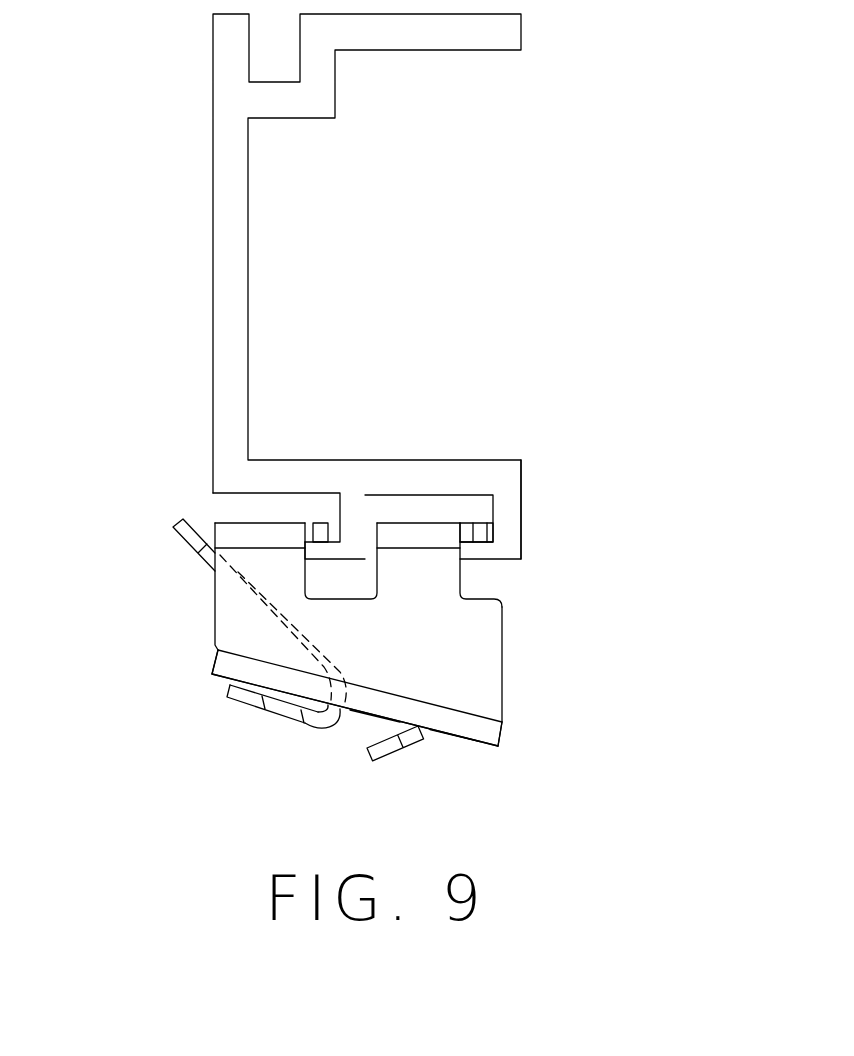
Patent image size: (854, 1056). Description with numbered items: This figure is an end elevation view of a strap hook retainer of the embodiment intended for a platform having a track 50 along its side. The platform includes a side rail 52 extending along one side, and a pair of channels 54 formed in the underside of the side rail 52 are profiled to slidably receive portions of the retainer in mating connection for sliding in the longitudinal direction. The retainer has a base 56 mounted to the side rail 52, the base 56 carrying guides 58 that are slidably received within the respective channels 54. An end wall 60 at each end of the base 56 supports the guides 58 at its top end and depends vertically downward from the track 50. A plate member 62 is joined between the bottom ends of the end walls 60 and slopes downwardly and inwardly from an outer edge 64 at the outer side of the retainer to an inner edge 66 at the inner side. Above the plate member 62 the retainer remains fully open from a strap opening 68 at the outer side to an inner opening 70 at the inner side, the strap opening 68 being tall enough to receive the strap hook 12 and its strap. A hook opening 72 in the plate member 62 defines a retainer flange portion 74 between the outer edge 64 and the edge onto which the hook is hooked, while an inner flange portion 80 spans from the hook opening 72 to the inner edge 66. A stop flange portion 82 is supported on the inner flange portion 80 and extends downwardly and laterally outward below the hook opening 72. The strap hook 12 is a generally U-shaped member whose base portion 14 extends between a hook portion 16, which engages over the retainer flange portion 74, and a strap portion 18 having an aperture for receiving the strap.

The strap hook 12 is at (187, 557).
The base portion 14 is at (330, 717).
The hook portion 16 is at (270, 703).
The strap portion 18 is at (184, 532).
The track 50 is at (568, 503).
The side rail 52 is at (237, 256).
The channels 54 is at (310, 492).
The base 56 is at (577, 572).
The guides 58 is at (273, 530).
The end wall 60 is at (485, 657).
The plate member 62 is at (512, 738).
The outer edge 64 is at (212, 671).
The inner edge 66 is at (502, 738).
The strap opening 68 is at (210, 619).
The inner opening 70 is at (507, 682).
The hook opening 72 is at (367, 722).
The retainer flange portion 74 is at (265, 692).
The inner flange portion 80 is at (458, 737).
The stop flange portion 82 is at (407, 759).